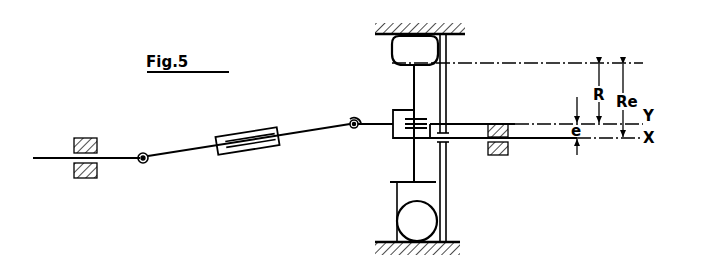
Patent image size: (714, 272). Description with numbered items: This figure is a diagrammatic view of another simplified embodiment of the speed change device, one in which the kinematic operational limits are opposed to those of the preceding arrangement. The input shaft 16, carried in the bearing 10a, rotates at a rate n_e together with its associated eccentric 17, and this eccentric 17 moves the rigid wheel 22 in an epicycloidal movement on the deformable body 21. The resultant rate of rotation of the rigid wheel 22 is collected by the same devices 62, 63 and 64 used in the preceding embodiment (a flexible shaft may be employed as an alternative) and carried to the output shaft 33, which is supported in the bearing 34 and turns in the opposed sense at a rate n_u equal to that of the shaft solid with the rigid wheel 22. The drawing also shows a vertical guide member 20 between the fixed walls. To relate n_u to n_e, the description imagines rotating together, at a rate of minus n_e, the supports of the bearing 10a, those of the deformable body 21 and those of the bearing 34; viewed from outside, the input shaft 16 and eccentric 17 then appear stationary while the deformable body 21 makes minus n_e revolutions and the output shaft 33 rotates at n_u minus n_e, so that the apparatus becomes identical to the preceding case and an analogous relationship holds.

The output shaft 33 is at (48, 160).
The bearing 34 is at (86, 137).
The collecting device 64 is at (146, 164).
The collecting device 63 is at (258, 152).
The collecting device 62 is at (355, 130).
The eccentric 17 is at (431, 121).
The deformable body 21 is at (392, 48).
The rigid wheel 22 is at (396, 64).
The guide rail 20 is at (447, 80).
The input shaft 16 is at (536, 139).
The bearing 10a is at (497, 156).